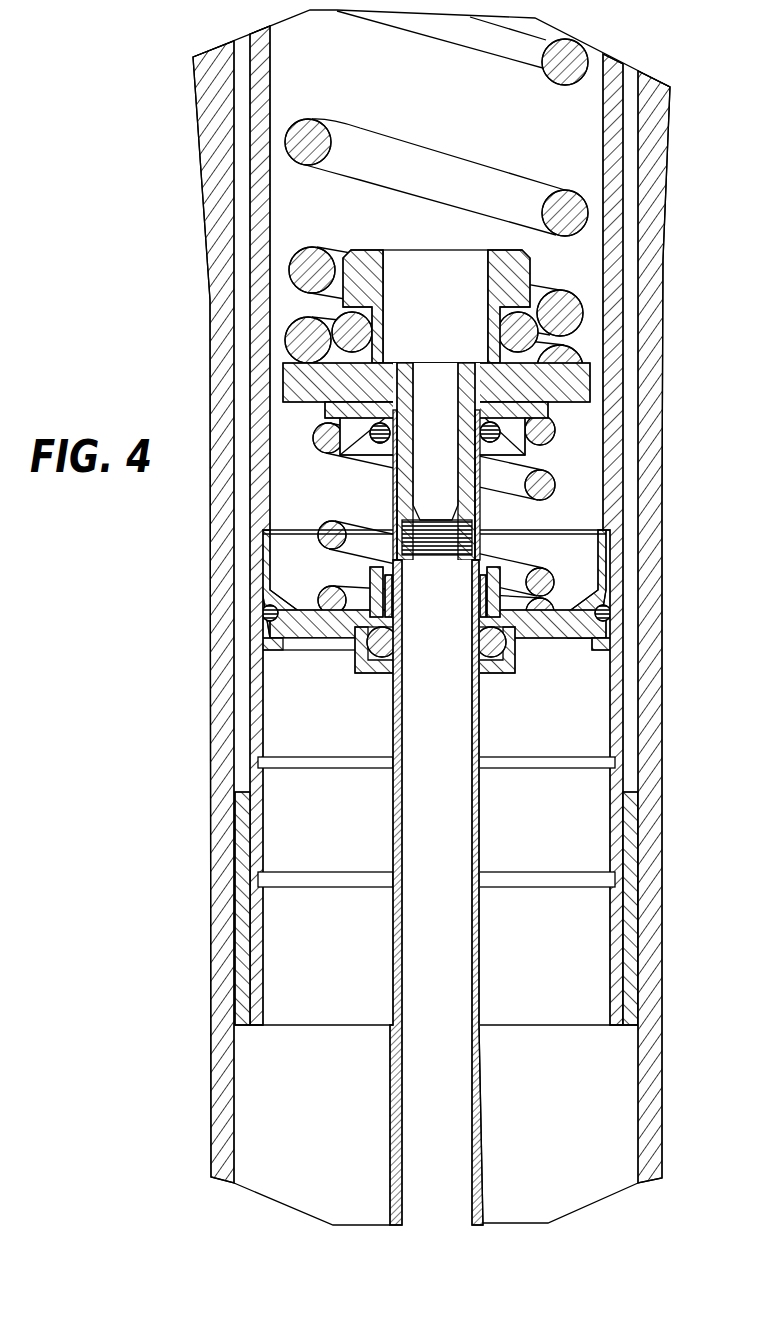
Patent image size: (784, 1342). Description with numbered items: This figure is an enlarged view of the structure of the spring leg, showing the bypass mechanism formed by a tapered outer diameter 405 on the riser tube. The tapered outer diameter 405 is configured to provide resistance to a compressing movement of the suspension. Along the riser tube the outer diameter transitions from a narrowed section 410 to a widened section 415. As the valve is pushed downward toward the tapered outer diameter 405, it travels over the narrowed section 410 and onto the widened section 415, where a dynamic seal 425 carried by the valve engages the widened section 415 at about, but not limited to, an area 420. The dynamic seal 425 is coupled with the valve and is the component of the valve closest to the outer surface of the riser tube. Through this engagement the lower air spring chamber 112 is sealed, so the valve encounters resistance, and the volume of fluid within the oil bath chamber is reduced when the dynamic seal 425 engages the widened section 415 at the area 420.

The lower air spring chamber 112 is at (582, 1190).
The tapered outer diameter 405 is at (383, 554).
The narrowed section 410 is at (480, 777).
The widened section 415 is at (483, 1127).
The area 420 is at (490, 962).
The dynamic seal 425 is at (505, 645).